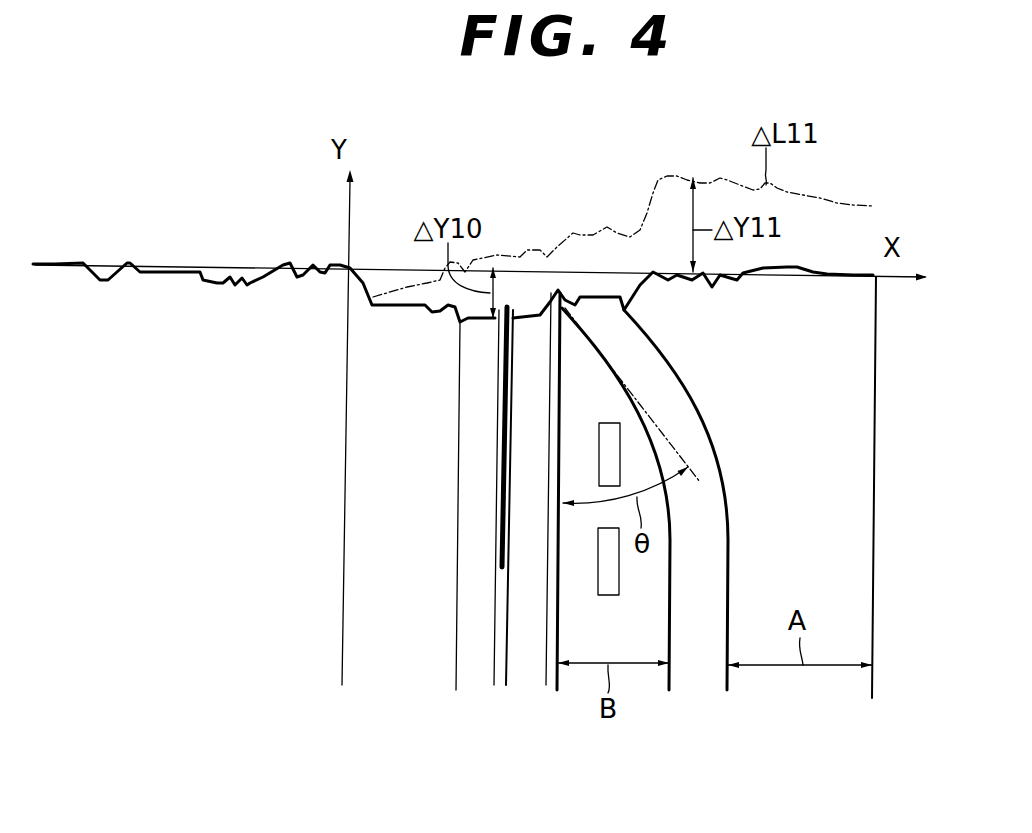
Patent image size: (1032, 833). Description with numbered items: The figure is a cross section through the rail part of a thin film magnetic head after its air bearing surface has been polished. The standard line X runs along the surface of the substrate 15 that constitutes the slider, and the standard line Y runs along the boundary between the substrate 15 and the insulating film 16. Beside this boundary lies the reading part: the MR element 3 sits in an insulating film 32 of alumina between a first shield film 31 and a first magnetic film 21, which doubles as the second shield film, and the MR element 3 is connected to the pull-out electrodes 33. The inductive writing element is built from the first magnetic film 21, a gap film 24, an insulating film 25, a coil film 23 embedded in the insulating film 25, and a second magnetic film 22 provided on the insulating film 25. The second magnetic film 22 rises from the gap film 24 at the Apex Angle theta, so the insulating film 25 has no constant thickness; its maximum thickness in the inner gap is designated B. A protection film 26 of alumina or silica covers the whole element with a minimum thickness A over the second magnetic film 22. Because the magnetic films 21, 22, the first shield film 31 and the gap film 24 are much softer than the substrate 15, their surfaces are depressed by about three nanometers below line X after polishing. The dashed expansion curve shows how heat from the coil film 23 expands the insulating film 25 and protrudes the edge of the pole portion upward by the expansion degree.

The substrate 15 is at (155, 290).
The insulating film 16 is at (352, 678).
The first magnetic film 21 is at (520, 682).
The second magnetic film 22 is at (717, 682).
The coil film 23 is at (603, 577).
The gap film 24 is at (550, 683).
The insulating film 25 is at (616, 527).
The protection film 26 is at (843, 518).
The MR element 3 is at (500, 488).
The first shield film 31 is at (465, 380).
The insulating film 32 is at (502, 590).
The pull-out electrode 33 is at (464, 497).